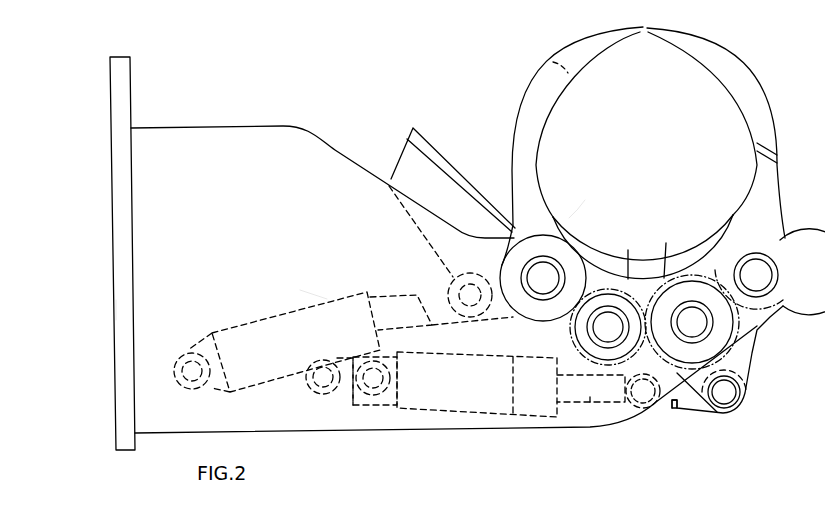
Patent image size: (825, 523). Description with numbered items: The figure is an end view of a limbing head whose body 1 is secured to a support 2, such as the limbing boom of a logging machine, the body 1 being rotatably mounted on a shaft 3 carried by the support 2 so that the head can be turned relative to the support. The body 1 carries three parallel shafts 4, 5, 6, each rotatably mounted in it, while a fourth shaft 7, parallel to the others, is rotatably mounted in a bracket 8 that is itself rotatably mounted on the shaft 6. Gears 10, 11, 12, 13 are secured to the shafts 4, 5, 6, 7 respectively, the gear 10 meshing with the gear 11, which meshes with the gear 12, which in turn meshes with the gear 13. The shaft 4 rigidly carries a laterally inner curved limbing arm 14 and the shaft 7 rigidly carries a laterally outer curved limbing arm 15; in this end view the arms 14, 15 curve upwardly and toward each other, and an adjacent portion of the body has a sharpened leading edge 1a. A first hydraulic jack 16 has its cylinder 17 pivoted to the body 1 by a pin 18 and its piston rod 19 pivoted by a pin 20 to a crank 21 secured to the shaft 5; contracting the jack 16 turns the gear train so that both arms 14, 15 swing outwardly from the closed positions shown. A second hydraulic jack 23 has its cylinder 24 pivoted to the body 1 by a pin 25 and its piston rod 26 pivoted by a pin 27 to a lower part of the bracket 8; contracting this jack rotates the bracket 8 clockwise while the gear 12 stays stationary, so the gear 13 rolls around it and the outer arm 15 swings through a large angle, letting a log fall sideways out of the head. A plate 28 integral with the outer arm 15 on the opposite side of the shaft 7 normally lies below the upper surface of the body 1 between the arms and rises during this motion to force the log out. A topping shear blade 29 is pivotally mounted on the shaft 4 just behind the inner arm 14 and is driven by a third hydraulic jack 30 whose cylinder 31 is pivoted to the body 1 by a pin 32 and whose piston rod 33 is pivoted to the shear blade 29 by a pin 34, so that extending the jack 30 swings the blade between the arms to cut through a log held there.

The body 1 is at (279, 138).
The sharpened leading edge 1a is at (653, 270).
The support 2 is at (113, 300).
The shaft 3 is at (113, 212).
The shaft 4 is at (540, 277).
The shaft 5 is at (603, 327).
The shaft 6 is at (687, 320).
The fourth shaft 7 is at (760, 271).
The bracket 8 is at (753, 323).
The gear 10 is at (578, 252).
The gear 11 is at (630, 255).
The gear 12 is at (671, 255).
The gear 13 is at (730, 242).
The laterally inner curved limbing arm 14 is at (523, 124).
The laterally outer curved limbing arm 15 is at (754, 91).
The first hydraulic jack 16 is at (360, 406).
The cylinder 17 is at (377, 410).
The pin 18 is at (331, 395).
The piston rod 19 is at (593, 398).
The pin 20 is at (641, 403).
The crank 21 is at (606, 384).
The second hydraulic jack 23 is at (493, 415).
The cylinder 24 is at (460, 410).
The pin 25 is at (366, 370).
The piston rod 26 is at (676, 406).
The pin 27 is at (718, 397).
The plate 28 is at (551, 212).
The topping shear blade 29 is at (413, 148).
The third hydraulic jack 30 is at (327, 299).
The cylinder 31 is at (258, 322).
The pin 32 is at (184, 358).
The piston rod 33 is at (403, 300).
The pin 34 is at (452, 275).